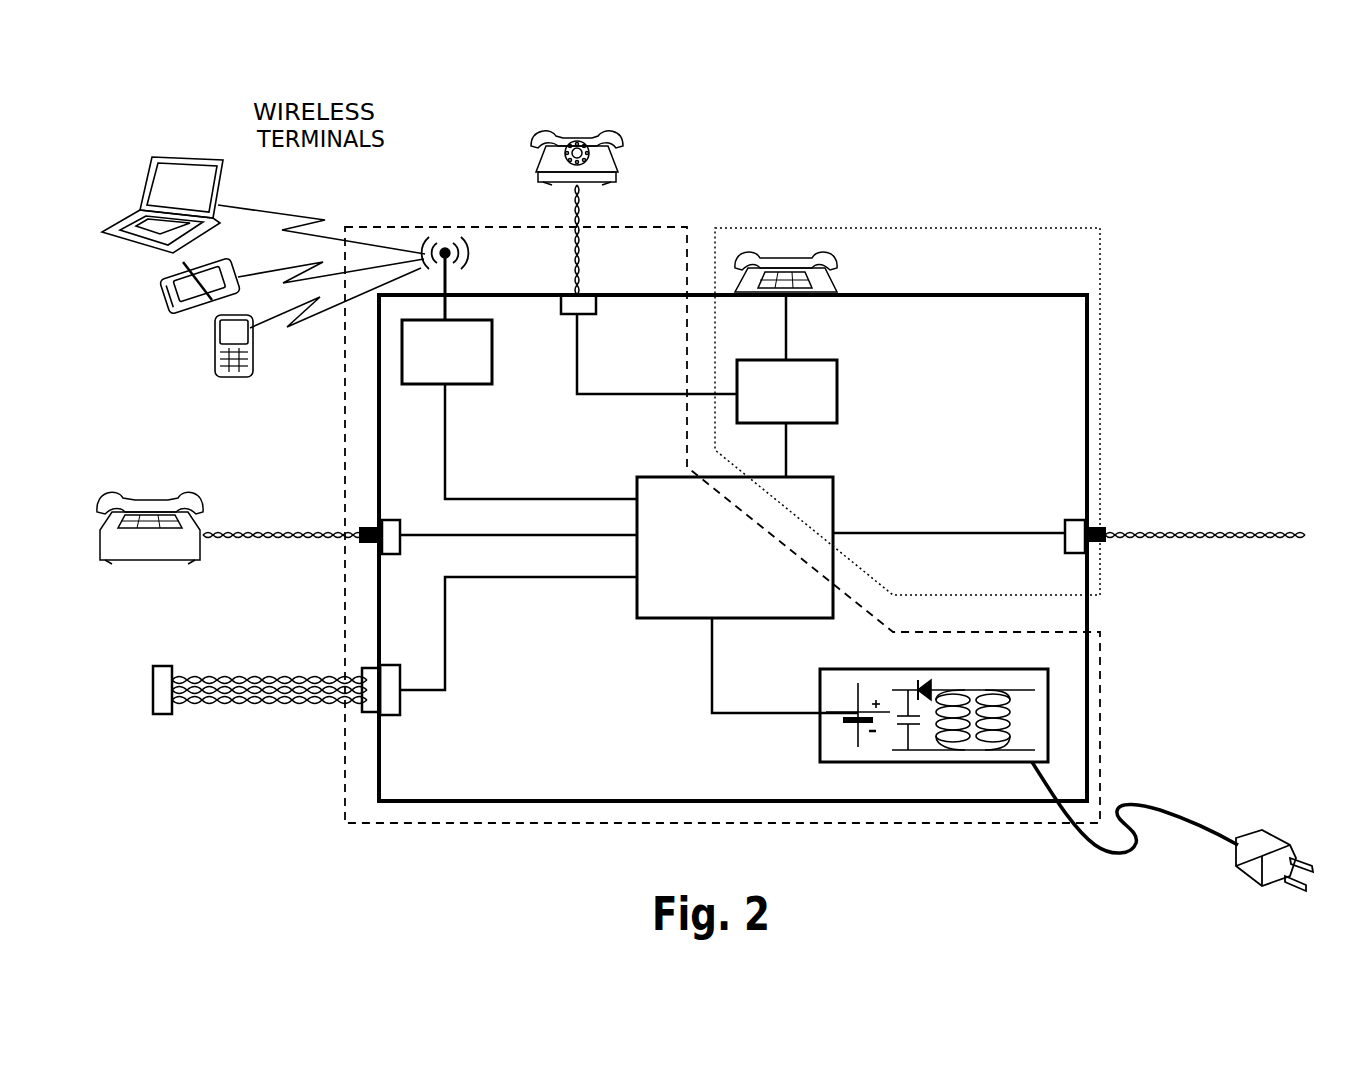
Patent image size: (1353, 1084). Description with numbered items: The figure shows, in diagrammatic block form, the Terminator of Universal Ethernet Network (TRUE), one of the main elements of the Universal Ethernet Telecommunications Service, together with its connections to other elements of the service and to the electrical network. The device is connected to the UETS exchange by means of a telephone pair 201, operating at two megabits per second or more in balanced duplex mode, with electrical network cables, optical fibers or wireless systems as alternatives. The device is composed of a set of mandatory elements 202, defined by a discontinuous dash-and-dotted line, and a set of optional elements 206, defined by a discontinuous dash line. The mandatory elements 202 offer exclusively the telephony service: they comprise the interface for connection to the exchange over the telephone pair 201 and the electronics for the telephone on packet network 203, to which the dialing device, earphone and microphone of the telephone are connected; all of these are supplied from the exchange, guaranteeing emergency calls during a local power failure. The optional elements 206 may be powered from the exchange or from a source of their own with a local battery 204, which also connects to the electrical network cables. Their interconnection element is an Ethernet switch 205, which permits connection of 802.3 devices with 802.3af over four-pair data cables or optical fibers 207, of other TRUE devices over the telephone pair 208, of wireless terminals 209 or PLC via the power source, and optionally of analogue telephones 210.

The telephone pair 201 is at (1198, 527).
The mandatory elements 202 is at (1047, 226).
The telephone on packet network 203 is at (845, 390).
The power supply with local battery 204 is at (1052, 711).
The Ethernet switch 205 is at (646, 624).
The optional elements 206 is at (362, 827).
The 4-pair data cables or optical fibers 207 is at (343, 664).
The telephone pair 208 is at (343, 526).
The wireless terminals 209 is at (418, 238).
The analogue telephones 210 is at (566, 255).